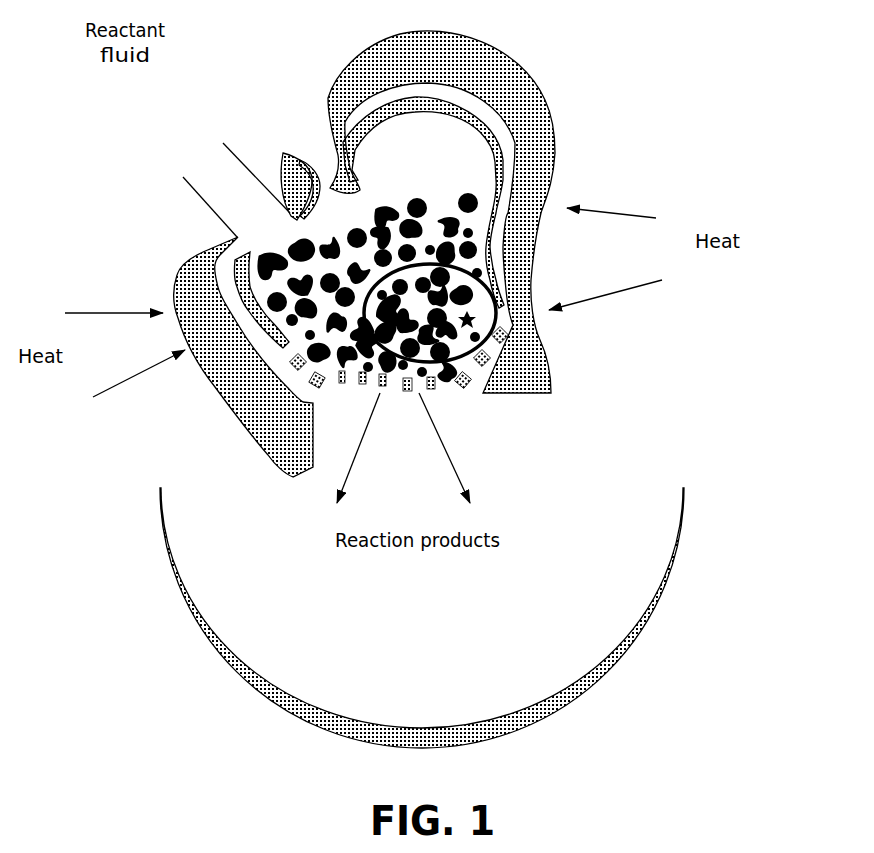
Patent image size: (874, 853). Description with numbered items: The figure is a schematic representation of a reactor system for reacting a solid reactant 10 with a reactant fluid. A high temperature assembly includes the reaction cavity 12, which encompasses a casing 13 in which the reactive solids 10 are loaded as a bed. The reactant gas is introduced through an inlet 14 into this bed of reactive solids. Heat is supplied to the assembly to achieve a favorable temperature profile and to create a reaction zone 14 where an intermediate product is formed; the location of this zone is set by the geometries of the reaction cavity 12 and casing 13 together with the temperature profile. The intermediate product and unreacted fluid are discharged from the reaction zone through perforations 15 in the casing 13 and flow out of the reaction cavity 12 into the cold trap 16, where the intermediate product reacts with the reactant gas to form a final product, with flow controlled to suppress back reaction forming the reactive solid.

The solid reactant 10 is at (478, 200).
The reaction cavity 12 is at (524, 95).
The casing 13 is at (501, 163).
The inlet 14 is at (258, 232).
The perforations 15 is at (420, 388).
The cold trap 16 is at (185, 614).